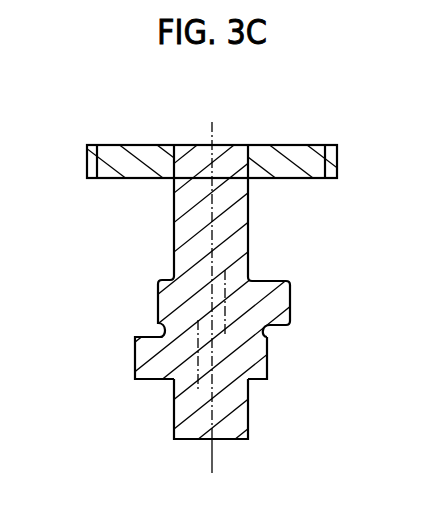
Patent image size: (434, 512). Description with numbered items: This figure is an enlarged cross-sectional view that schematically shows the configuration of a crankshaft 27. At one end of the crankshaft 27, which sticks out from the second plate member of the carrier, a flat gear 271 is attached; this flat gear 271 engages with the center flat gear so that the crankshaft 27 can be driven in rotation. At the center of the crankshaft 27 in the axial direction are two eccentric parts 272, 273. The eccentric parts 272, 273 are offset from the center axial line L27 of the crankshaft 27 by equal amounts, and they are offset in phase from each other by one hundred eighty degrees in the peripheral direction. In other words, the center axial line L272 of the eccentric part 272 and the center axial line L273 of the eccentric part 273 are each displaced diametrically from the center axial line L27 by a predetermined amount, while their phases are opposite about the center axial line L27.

The crankshaft 27 is at (227, 145).
The flat gear 271 is at (332, 158).
The eccentric part 272 is at (282, 303).
The eccentric part 273 is at (140, 358).
The center axial line of the crankshaft L27 is at (212, 313).
The center axial line of the eccentric part L272 is at (250, 273).
The center axial line of the eccentric part L273 is at (197, 381).